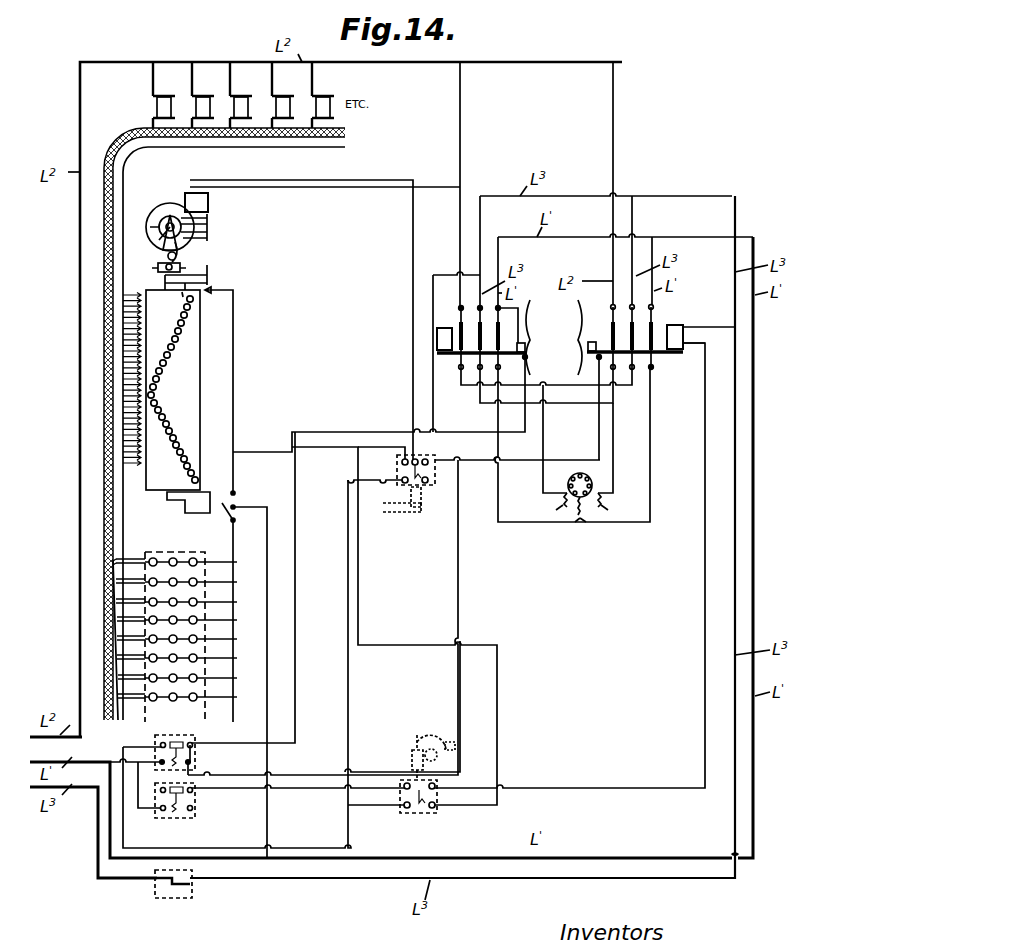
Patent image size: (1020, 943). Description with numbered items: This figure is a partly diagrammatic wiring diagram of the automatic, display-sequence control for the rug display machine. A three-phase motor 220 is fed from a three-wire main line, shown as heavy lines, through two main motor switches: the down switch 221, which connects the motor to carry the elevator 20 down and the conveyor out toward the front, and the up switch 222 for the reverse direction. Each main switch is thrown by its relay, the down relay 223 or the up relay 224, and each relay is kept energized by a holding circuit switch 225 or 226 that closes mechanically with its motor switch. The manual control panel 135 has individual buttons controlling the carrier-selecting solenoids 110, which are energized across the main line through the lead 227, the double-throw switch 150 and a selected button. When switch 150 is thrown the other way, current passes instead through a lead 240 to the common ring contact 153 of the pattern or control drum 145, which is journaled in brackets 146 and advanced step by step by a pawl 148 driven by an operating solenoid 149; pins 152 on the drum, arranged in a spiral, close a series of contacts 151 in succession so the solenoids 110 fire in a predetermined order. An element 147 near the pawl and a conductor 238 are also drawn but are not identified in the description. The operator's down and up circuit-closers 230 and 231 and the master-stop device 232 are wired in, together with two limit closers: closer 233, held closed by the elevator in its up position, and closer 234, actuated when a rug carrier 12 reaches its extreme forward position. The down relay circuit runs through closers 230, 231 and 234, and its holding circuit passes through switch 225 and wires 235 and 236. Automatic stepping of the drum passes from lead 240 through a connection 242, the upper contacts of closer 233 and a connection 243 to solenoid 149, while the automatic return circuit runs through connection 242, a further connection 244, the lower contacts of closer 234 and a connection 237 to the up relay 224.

The rug carrier 12 is at (455, 743).
The elevator 20 is at (393, 515).
The carrier-selecting solenoids 110 is at (170, 88).
The manual control panel 135 is at (172, 552).
The pattern or control drum 145 is at (158, 212).
The brackets 146 is at (208, 234).
The pawl 147 is at (150, 268).
The pawl 148 is at (183, 250).
The operating solenoid 149 is at (192, 196).
The double-throw switch 150 is at (228, 522).
The contacts 151 is at (146, 297).
The buttons or pins 152 is at (165, 348).
The common ring contact 153 is at (184, 296).
The three-phase motor 220 is at (607, 525).
The main motor switch 221 is at (590, 352).
The main motor switch 222 is at (580, 345).
The down relay 223 is at (692, 326).
The up relay 224 is at (437, 343).
The holding circuit switch 225 is at (555, 444).
The holding circuit switch 226 is at (522, 345).
The lead 227 is at (268, 592).
The down circuit-closer 230 is at (198, 757).
The up circuit-closer 231 is at (195, 822).
The master-stop button 232 is at (182, 900).
The circuit-closer 233 is at (437, 486).
The circuit-closer 234 is at (437, 815).
The wire 235 is at (561, 460).
The wire 236 is at (459, 548).
The connection 237 is at (294, 552).
The conductor 238 is at (458, 426).
The lead 240 is at (234, 396).
The connection 242 is at (265, 448).
The connection 243 is at (352, 172).
The connection 244 is at (358, 465).